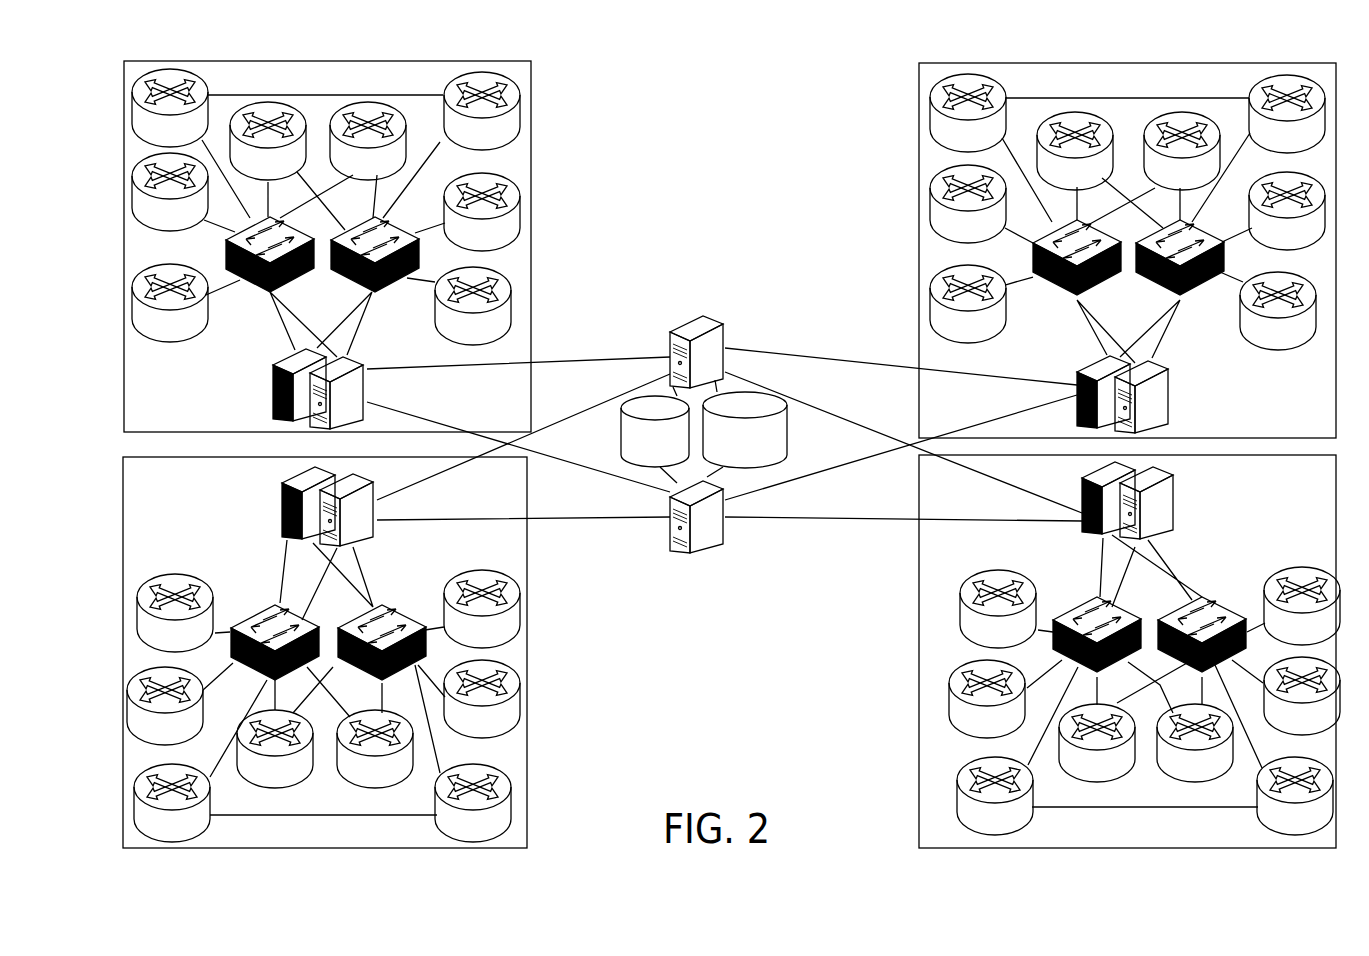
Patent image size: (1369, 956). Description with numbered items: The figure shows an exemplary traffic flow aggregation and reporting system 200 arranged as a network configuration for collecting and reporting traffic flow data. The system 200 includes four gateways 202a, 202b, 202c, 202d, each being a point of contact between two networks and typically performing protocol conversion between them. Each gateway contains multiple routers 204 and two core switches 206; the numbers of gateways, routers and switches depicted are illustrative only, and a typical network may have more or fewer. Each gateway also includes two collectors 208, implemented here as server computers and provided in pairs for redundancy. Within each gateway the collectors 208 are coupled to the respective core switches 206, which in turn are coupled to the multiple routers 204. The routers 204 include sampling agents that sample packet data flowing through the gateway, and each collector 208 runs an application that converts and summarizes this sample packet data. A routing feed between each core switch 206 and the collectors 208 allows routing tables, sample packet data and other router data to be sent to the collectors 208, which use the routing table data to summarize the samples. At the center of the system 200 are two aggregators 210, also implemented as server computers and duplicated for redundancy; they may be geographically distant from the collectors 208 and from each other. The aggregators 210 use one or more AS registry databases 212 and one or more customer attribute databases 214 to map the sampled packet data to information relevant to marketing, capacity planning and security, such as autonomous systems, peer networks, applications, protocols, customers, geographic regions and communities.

The traffic flow aggregation and reporting system 200 is at (741, 114).
The gateway 202a is at (327, 246).
The gateway 202b is at (1127, 250).
The gateway 202c is at (325, 652).
The gateway 202d is at (1127, 651).
The router 204 is at (510, 242).
The core switch 206 is at (268, 292).
The collector 208 is at (273, 400).
The aggregator 210 is at (678, 326).
The AS registry database 212 is at (655, 431).
The customer attribute database 214 is at (745, 430).